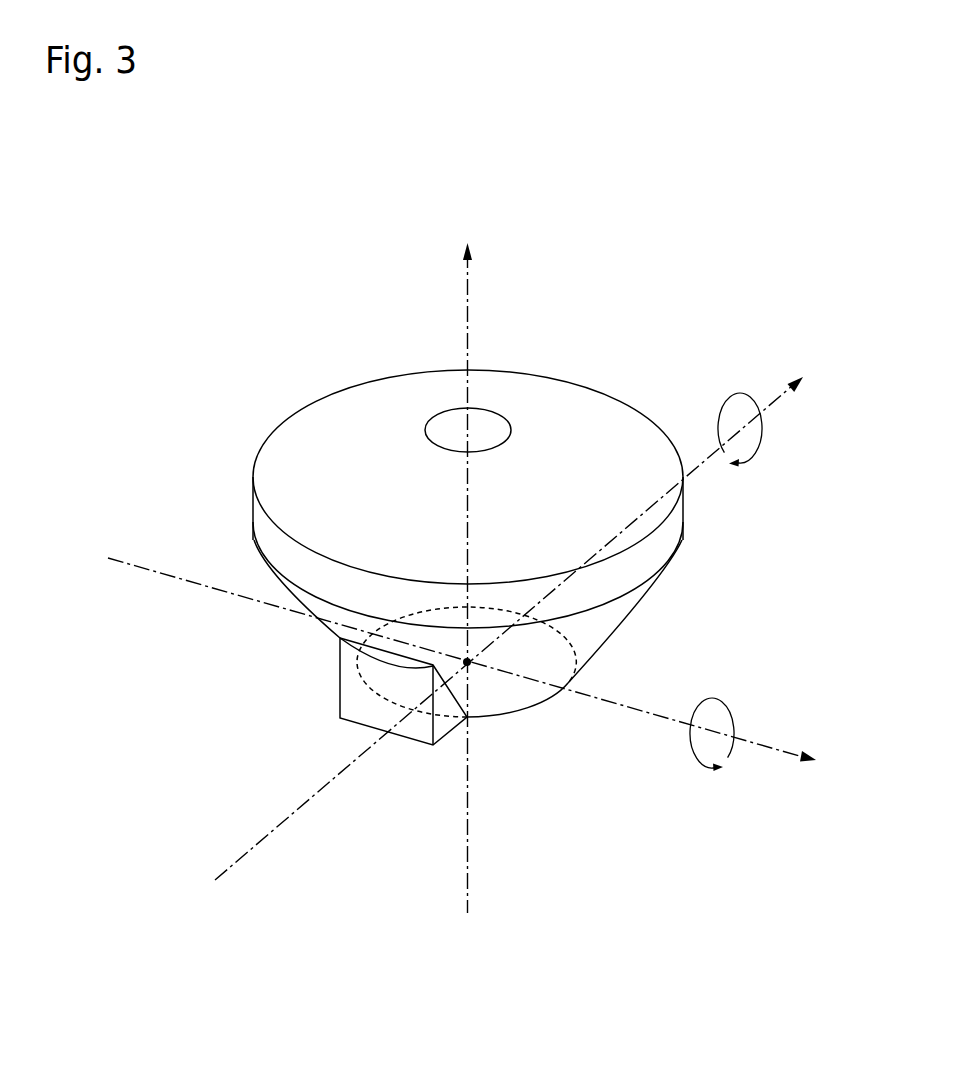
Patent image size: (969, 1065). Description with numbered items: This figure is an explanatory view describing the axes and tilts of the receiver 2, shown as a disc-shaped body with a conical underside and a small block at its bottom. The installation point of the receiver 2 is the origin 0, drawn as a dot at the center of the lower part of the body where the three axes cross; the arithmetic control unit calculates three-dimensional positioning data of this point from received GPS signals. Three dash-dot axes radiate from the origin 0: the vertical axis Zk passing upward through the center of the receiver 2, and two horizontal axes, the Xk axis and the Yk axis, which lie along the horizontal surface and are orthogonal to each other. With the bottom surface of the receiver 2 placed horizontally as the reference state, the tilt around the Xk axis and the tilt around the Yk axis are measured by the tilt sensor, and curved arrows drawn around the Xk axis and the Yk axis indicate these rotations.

The receiver 2 is at (277, 332).
The origin 0 is at (475, 676).
The Xk axis Xk is at (481, 696).
The Yk axis Yk is at (525, 617).
The Zk axis Zk is at (472, 565).